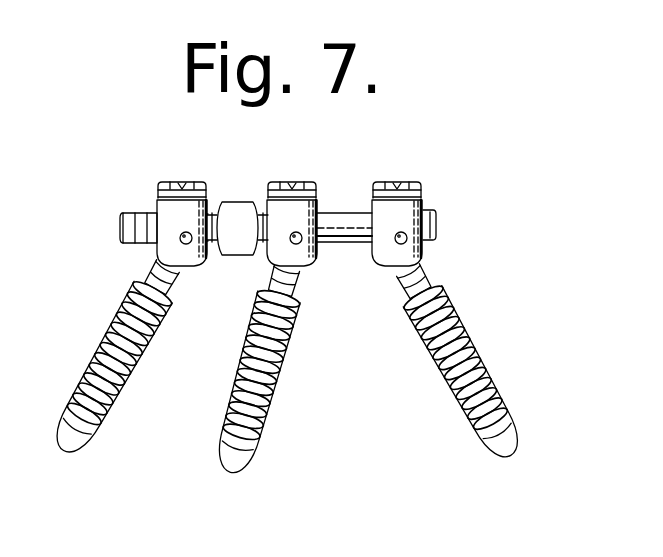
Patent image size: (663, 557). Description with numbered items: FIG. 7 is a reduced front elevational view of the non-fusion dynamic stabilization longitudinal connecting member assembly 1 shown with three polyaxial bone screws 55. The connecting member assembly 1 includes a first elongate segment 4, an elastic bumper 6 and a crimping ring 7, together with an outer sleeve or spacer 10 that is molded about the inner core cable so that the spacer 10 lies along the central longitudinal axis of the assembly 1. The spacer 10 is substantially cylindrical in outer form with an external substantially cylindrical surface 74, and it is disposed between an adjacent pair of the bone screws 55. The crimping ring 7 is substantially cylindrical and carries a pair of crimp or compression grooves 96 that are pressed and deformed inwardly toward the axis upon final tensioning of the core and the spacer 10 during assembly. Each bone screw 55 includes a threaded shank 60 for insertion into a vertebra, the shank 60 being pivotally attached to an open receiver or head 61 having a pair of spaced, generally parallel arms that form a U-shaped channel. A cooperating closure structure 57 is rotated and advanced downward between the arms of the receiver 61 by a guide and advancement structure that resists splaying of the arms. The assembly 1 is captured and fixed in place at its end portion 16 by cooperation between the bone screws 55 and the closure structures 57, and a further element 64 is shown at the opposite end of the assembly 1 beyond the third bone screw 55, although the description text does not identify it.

The non-fusion dynamic stabilization longitudinal connecting member assembly 1 is at (226, 270).
The first elongate segment 4 is at (336, 256).
The elastic bumper 6 is at (141, 212).
The crimping ring 7 is at (123, 224).
The spacer 10 is at (232, 202).
The end portion 16 is at (338, 214).
The polyaxial bone screw 55 is at (94, 327).
The closure structure 57 is at (198, 182).
The shank 60 is at (120, 393).
The receiver 61 is at (163, 260).
The end cap 64 is at (434, 226).
The external substantially cylindrical surface 74 is at (226, 241).
The crimp or compression grooves 96 is at (127, 215).